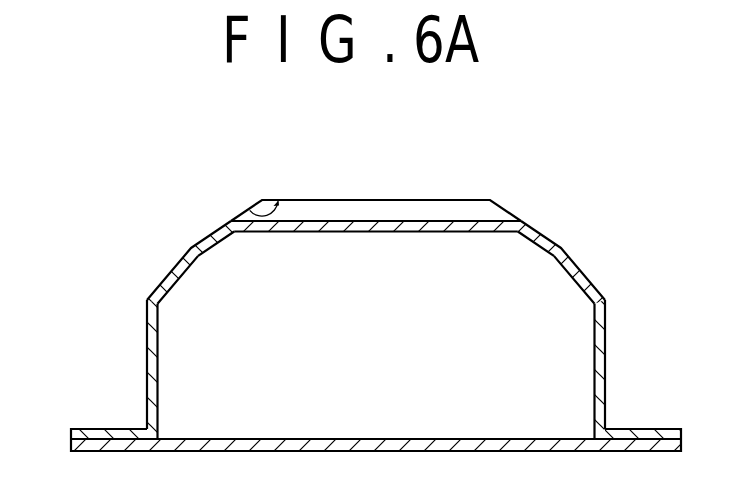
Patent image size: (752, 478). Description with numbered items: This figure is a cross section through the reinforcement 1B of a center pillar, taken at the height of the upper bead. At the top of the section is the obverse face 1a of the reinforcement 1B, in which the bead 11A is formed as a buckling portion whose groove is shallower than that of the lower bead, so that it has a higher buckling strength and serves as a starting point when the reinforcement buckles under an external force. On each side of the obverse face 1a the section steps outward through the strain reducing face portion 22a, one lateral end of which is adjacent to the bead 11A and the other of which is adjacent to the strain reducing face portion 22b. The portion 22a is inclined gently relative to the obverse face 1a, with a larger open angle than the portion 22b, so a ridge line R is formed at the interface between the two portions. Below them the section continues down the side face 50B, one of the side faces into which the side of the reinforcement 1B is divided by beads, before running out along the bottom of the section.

The obverse face 1a is at (298, 198).
The bead 11A is at (398, 220).
The strain reducing face portion 22a is at (213, 224).
The strain reducing face portion 22b is at (163, 278).
The ridge line R is at (188, 246).
The reinforcement 1B is at (607, 298).
The side face 50B is at (147, 362).